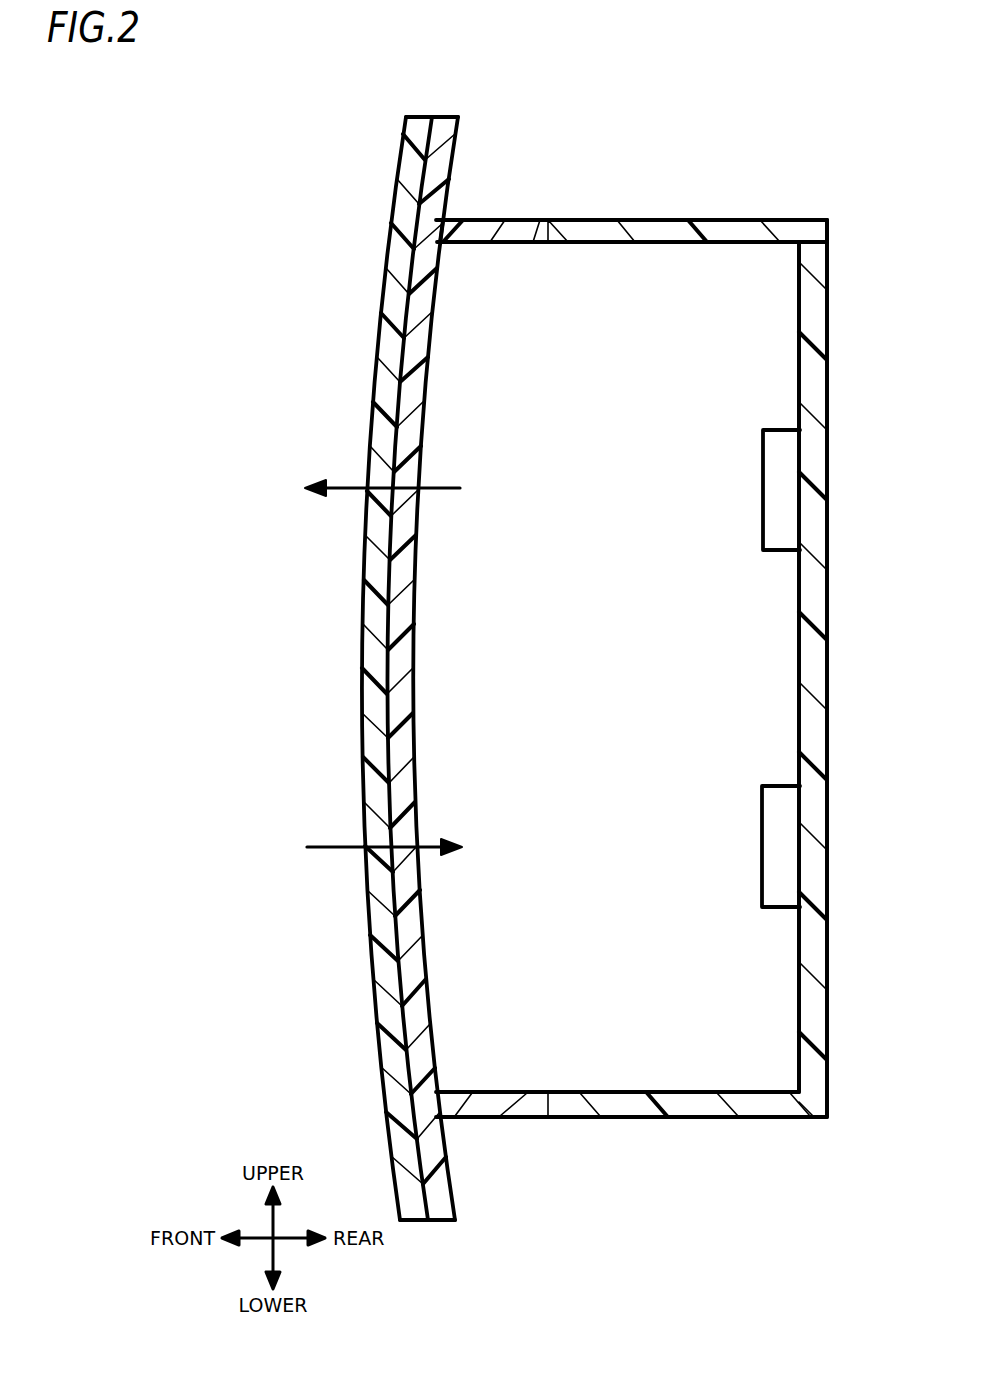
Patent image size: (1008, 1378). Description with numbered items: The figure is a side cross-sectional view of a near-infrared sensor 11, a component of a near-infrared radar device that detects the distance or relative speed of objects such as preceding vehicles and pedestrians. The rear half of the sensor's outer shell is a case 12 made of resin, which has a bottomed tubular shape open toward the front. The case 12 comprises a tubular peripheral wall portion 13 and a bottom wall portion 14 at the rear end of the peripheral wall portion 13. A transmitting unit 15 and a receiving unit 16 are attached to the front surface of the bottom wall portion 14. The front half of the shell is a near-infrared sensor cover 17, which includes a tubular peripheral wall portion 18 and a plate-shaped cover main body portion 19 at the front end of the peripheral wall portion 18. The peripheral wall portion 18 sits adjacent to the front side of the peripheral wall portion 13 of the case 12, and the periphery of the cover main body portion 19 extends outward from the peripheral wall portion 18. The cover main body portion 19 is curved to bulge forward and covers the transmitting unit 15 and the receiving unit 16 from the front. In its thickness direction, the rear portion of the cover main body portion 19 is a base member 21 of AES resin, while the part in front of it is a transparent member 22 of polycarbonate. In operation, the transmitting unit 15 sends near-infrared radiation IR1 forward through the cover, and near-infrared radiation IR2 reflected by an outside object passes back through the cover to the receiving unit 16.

The near-infrared sensor 11 is at (660, 1152).
The case 12 is at (875, 142).
The peripheral wall portion 13 is at (743, 232).
The bottom wall portion 14 is at (818, 265).
The transmitting unit 15 is at (777, 488).
The receiving unit 16 is at (777, 848).
The near-infrared sensor cover 17 is at (530, 72).
The peripheral wall portion 18 is at (488, 236).
The cover main body portion 19 is at (417, 116).
The base member 21 is at (412, 423).
The transparent member 22 is at (380, 423).
The near-infrared radiation IR1 is at (435, 493).
The near-infrared radiation IR2 is at (422, 842).